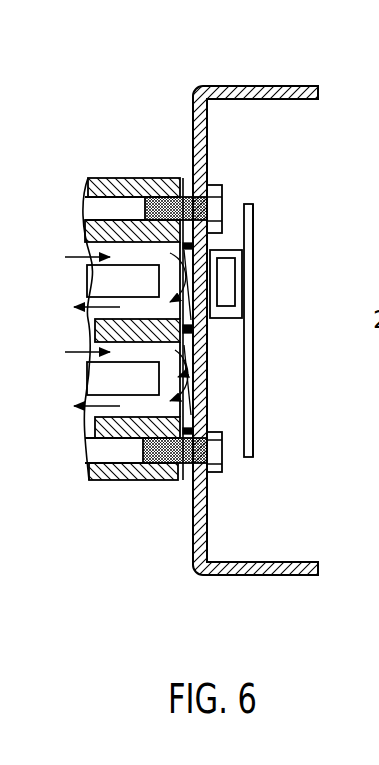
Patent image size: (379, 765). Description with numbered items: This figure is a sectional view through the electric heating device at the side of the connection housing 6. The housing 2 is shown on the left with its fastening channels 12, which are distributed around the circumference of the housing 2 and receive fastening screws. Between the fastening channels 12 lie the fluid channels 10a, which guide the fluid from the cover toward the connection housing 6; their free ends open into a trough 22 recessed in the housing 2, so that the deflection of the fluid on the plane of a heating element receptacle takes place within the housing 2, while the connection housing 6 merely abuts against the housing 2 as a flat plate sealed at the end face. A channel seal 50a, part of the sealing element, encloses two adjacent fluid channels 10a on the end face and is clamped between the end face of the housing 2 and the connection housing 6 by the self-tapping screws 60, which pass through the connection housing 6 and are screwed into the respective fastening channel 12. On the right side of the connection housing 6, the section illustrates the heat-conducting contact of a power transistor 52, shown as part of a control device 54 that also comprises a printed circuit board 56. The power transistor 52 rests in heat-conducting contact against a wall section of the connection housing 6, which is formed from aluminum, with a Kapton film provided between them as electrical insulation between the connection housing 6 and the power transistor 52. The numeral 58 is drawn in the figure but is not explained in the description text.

The connection housing 6 is at (324, 90).
The housing 2 is at (166, 326).
The fastening channel 12 is at (72, 208).
The fluid channel 10a is at (70, 264).
The trough 22 is at (195, 372).
The channel seal 50a is at (205, 338).
The power transistor 52 is at (233, 287).
The control device 54 is at (249, 195).
The printed circuit board 56 is at (250, 222).
The thermal interface 58 is at (213, 252).
The self-tapping screw 60 is at (221, 178).